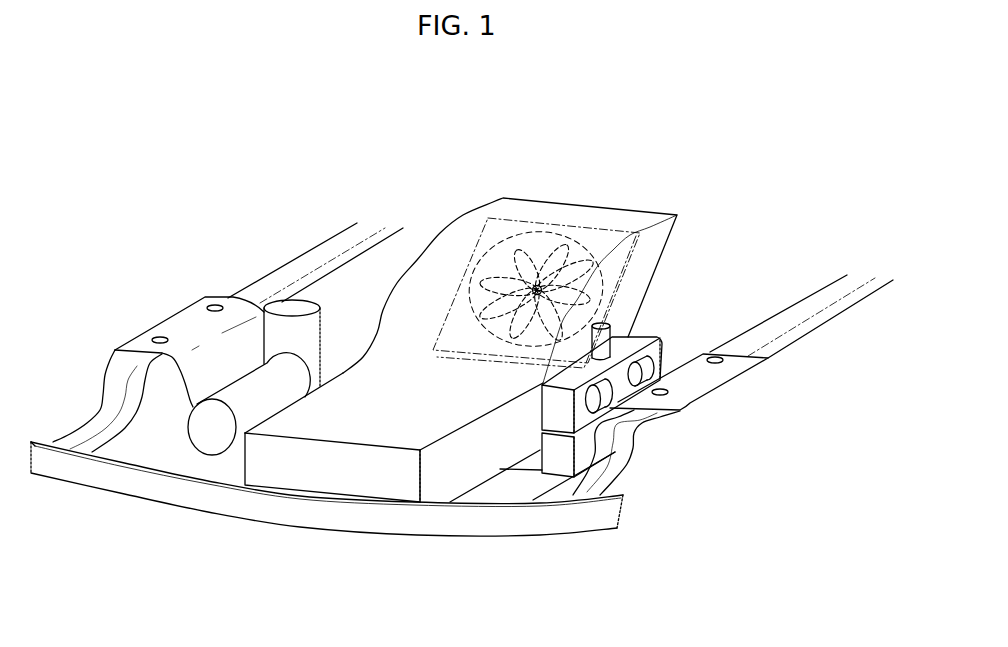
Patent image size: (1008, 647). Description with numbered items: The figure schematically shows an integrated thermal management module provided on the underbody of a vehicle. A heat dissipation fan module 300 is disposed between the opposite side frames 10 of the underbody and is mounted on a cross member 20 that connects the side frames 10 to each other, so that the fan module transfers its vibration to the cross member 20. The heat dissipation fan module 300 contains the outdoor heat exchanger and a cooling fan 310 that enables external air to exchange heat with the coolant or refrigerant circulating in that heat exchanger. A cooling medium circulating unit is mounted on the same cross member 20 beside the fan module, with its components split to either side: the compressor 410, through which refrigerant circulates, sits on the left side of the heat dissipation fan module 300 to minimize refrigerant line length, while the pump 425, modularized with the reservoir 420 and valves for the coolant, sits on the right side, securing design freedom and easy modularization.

The side frame 10 is at (330, 248).
The cross member 20 is at (693, 384).
The heat dissipation fan module 300 is at (507, 207).
The cooling fan 310 is at (539, 283).
The compressor 410 is at (207, 432).
The reservoir 420 is at (633, 342).
The pump 425 is at (652, 373).